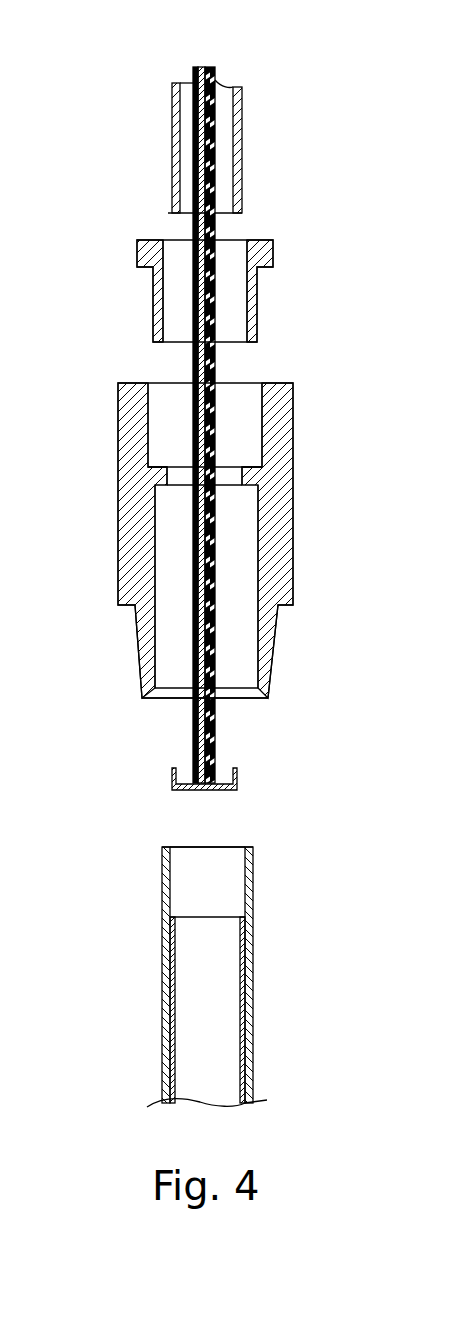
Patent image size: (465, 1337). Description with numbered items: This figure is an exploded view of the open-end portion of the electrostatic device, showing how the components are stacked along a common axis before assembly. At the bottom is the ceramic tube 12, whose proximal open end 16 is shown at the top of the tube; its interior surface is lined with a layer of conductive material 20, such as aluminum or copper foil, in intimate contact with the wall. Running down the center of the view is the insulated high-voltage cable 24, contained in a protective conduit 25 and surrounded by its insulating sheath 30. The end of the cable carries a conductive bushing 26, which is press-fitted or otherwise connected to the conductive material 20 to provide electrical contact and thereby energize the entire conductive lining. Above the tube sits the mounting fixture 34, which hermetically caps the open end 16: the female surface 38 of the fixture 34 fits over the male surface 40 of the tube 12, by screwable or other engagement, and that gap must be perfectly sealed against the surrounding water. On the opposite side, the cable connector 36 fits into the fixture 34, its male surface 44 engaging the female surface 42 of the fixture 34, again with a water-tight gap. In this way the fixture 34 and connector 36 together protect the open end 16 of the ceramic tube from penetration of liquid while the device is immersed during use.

The ceramic tube 12 is at (253, 928).
The open end 16 is at (222, 847).
The conductive material 20 is at (173, 1002).
The high-voltage cable 24 is at (205, 67).
The protective conduit 25 is at (242, 143).
The conductive bushing 26 is at (237, 773).
The insulating sheath 30 is at (215, 78).
The mounting fixture 34 is at (293, 458).
The cable connector 36 is at (257, 295).
The female surface 38 is at (153, 652).
The male surface 40 is at (162, 936).
The female surface 42 is at (148, 408).
The male surface 44 is at (243, 318).